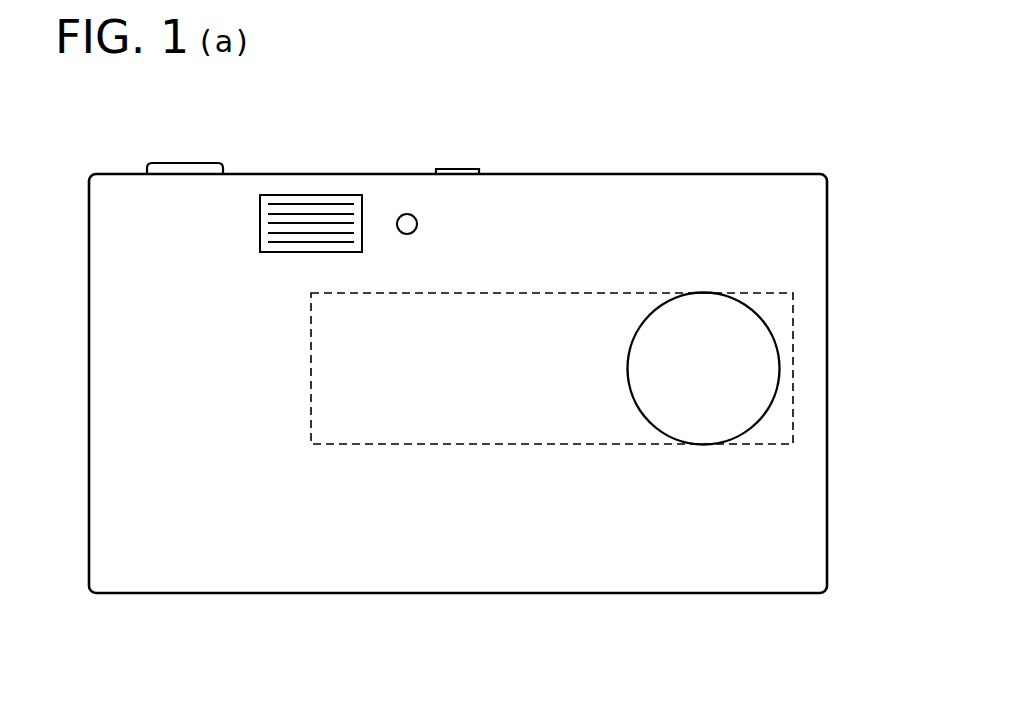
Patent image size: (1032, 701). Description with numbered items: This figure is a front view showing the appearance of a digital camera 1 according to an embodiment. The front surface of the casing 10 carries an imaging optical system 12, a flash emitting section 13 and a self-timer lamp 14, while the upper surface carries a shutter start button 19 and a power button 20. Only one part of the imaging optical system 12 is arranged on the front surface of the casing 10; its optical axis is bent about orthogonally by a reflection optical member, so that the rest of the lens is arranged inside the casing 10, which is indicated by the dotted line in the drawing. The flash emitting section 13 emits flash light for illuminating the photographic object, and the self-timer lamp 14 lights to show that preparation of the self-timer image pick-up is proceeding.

The digital camera 1 is at (798, 609).
The casing 10 is at (372, 595).
The imaging optical system 12 is at (793, 334).
The flash emitting section 13 is at (312, 205).
The self-timer lamp 14 is at (407, 213).
The shutter start button 19 is at (185, 163).
The power button 20 is at (455, 169).